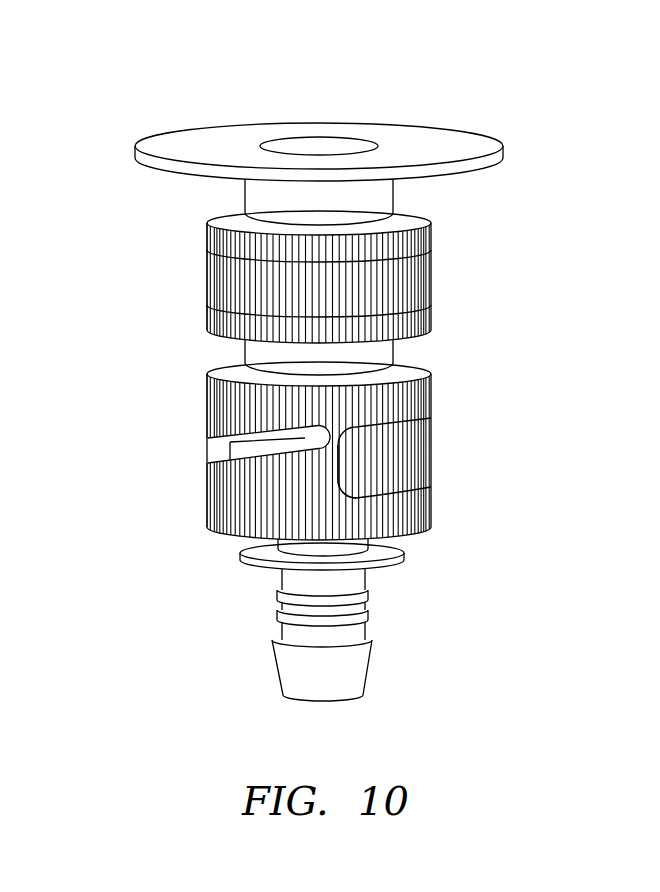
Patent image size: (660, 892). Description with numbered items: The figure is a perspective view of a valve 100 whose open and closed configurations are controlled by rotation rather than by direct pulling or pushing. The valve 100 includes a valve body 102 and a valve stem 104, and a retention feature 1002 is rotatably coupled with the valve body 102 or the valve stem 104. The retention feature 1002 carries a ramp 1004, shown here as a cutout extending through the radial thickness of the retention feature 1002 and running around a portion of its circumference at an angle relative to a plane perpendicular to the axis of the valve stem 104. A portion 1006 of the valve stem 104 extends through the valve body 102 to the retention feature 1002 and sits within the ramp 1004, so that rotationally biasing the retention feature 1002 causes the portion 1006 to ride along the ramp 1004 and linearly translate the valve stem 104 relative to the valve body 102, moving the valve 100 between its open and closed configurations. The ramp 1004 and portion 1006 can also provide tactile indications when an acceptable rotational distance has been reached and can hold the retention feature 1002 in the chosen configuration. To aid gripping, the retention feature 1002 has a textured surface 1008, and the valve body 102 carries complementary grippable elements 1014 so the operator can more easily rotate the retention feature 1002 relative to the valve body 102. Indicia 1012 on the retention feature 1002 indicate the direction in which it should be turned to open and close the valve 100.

The valve 100 is at (466, 91).
The valve body 102 is at (208, 322).
The valve stem 104 is at (368, 663).
The retention feature 1002 is at (428, 503).
The ramp 1004 is at (211, 462).
The portion of the valve stem 1006 is at (230, 442).
The textured surface 1008 is at (432, 437).
The indicia 1012 is at (365, 468).
The complementary grippable elements 1014 is at (432, 282).